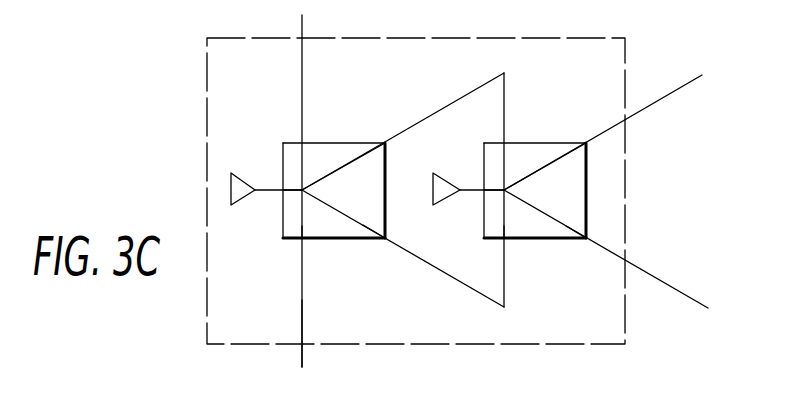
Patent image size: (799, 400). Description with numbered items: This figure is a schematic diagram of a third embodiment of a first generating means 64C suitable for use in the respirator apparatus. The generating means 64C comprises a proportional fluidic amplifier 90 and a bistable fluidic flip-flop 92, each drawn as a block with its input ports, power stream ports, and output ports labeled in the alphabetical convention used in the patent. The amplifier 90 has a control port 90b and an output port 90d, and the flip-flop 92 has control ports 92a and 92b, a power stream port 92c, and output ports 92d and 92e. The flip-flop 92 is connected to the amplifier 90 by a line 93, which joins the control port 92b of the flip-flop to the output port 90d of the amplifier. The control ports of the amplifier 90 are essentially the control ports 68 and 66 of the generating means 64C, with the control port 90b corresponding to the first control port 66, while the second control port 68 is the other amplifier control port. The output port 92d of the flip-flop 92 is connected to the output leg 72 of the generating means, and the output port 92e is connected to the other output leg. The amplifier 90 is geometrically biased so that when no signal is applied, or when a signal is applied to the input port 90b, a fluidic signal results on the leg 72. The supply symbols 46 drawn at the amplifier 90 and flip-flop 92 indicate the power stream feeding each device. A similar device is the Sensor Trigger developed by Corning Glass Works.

The first generating means 64C is at (207, 93).
The first control port 66 is at (303, 38).
The second control port 68 is at (304, 350).
The light source 46 is at (241, 171).
The proportional fluidic amplifier 90 is at (317, 187).
The control port 90b is at (304, 151).
The output port 90d is at (360, 152).
The bistable fluidic flip-flop 92 is at (515, 186).
The control port 92b is at (506, 151).
The output port 92d is at (553, 160).
The control port 92a is at (306, 226).
The power stream port 92c is at (292, 190).
The output port 92e is at (363, 228).
The line 93 is at (415, 126).
The second output port or leg 72 is at (659, 99).